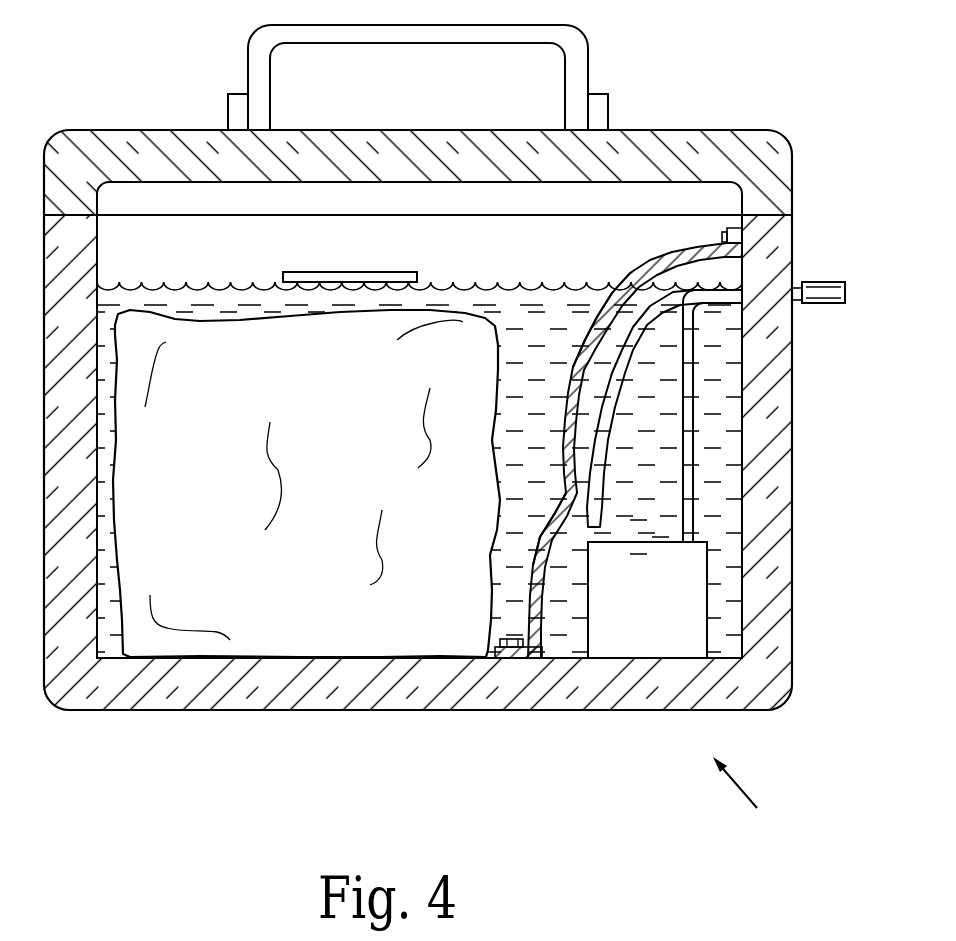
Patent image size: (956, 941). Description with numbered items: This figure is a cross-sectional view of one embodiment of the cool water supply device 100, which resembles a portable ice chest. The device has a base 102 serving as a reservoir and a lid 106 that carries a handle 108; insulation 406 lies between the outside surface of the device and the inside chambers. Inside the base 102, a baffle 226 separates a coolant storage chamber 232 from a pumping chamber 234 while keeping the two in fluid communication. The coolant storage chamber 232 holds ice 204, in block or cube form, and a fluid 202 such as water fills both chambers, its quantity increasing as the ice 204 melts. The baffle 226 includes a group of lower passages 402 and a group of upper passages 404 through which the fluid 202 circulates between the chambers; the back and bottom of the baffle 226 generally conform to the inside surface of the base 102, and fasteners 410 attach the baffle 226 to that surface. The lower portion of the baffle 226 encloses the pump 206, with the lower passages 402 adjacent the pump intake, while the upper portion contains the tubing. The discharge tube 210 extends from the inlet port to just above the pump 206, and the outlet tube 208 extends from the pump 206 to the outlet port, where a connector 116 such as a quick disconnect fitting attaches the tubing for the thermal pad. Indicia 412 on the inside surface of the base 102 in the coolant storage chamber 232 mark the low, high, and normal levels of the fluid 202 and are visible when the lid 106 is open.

The cool water supply device 100 is at (759, 796).
The base 102 is at (412, 710).
The lid 106 is at (143, 130).
The handle 108 is at (248, 59).
The connector 116 is at (823, 282).
The fluid 202 is at (190, 288).
The ice 204 is at (395, 460).
The pump 206 is at (678, 612).
The outlet tube 208 is at (695, 437).
The discharge tube 210 is at (660, 320).
The baffle 226 is at (635, 276).
The coolant storage chamber 232 is at (126, 260).
The pumping chamber 234 is at (626, 500).
The lower passages 402 is at (512, 595).
The upper passages 404 is at (590, 311).
The insulation 406 is at (173, 693).
The fasteners 410 is at (720, 235).
The indicia 412 is at (395, 272).